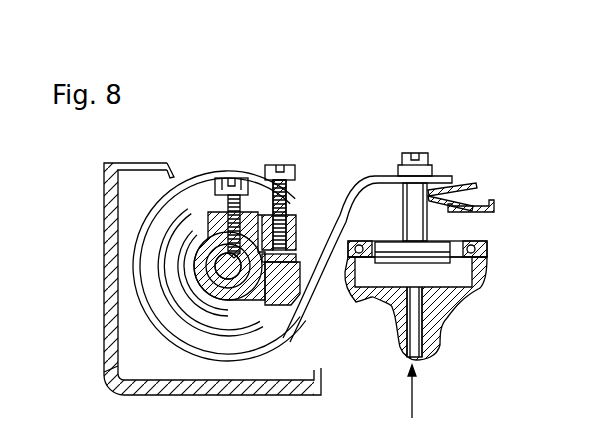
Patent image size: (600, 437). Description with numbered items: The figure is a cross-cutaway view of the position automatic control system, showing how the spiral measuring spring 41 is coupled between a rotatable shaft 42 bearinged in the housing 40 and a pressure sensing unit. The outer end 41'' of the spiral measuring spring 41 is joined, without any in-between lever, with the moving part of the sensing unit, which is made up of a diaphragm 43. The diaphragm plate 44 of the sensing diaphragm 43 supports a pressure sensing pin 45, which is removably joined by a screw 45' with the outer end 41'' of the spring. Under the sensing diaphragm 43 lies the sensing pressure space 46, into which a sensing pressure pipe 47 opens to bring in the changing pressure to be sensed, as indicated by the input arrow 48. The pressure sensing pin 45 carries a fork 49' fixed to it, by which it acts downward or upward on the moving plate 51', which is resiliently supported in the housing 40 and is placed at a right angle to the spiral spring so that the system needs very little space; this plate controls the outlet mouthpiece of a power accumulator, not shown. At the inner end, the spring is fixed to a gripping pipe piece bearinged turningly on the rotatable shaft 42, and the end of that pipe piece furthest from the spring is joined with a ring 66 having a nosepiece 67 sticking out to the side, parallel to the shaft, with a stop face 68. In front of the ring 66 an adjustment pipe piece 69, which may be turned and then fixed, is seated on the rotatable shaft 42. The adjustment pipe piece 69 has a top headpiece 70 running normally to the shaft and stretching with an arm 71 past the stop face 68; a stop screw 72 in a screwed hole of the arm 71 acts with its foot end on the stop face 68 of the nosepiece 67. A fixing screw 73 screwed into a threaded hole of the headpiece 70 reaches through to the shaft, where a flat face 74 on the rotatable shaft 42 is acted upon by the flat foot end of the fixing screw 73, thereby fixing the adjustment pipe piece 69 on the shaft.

The housing 40 is at (104, 315).
The spiral measuring spring 41 is at (219, 241).
The outer end of the spiral measuring spring 41'' is at (367, 231).
The rotatable shaft 42 is at (186, 304).
The diaphragm 43 is at (468, 241).
The diaphragm plate 44 is at (434, 261).
The pressure sensing pin 45 is at (393, 212).
The screw 45' is at (429, 148).
The sensing pressure space 46 is at (392, 277).
The sensing pressure pipe 47 is at (417, 342).
The input arrow 48 is at (412, 399).
The fork 49' is at (466, 172).
The moving plate 51' is at (493, 187).
The ring 66 is at (206, 272).
The nosepiece 67 is at (283, 300).
The stop face 68 is at (292, 256).
The adjustment pipe piece 69 is at (215, 265).
The headpiece 70 is at (228, 215).
The arm 71 is at (294, 228).
The stop screw 72 is at (284, 165).
The fixing screw 73 is at (223, 180).
The flat face 74 is at (238, 248).